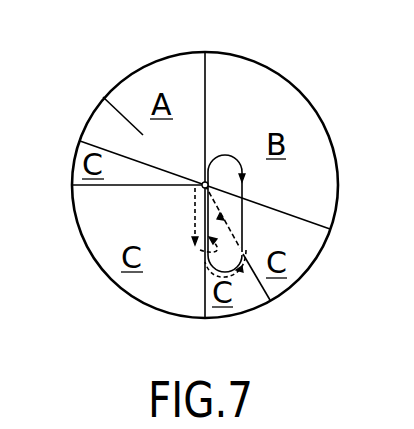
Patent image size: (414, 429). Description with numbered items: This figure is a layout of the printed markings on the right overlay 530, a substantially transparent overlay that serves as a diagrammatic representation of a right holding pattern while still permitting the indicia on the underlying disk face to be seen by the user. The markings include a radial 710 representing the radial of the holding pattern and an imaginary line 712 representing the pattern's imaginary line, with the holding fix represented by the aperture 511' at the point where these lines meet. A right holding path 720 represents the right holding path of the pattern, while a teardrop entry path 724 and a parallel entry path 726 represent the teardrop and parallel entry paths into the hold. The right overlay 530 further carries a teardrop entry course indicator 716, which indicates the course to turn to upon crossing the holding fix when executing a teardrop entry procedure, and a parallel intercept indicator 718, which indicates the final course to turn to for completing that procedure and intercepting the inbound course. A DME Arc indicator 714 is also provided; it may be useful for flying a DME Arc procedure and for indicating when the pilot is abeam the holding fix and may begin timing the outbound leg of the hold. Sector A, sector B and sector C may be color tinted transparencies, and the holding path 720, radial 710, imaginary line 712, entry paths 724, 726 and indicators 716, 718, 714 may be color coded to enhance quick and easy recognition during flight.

The right overlay 530 is at (88, 59).
The radial 710 is at (207, 88).
The aperture 511' is at (267, 170).
The parallel intercept indicator 718 is at (104, 100).
The imaginary line 712 is at (307, 216).
The DME Arc indicator 714 is at (92, 186).
The teardrop entry course indicator 716 is at (263, 285).
The right holding path 720 is at (243, 227).
The teardrop entry path 724 is at (232, 267).
The parallel entry path 726 is at (203, 250).